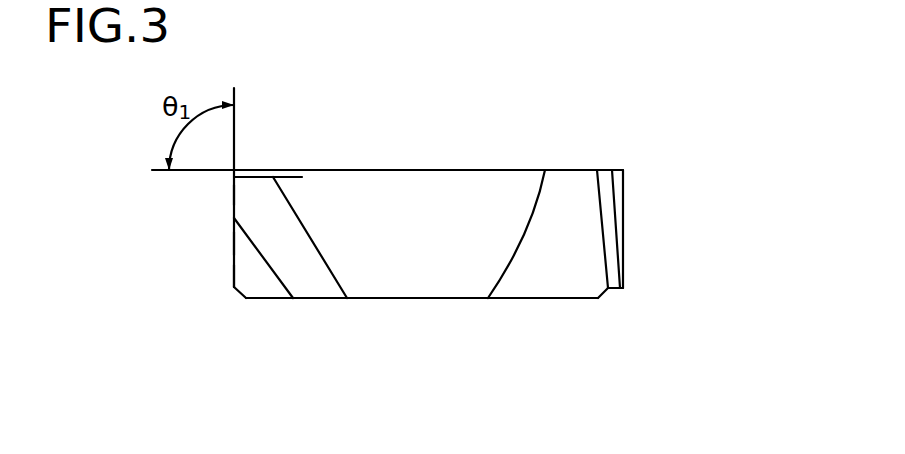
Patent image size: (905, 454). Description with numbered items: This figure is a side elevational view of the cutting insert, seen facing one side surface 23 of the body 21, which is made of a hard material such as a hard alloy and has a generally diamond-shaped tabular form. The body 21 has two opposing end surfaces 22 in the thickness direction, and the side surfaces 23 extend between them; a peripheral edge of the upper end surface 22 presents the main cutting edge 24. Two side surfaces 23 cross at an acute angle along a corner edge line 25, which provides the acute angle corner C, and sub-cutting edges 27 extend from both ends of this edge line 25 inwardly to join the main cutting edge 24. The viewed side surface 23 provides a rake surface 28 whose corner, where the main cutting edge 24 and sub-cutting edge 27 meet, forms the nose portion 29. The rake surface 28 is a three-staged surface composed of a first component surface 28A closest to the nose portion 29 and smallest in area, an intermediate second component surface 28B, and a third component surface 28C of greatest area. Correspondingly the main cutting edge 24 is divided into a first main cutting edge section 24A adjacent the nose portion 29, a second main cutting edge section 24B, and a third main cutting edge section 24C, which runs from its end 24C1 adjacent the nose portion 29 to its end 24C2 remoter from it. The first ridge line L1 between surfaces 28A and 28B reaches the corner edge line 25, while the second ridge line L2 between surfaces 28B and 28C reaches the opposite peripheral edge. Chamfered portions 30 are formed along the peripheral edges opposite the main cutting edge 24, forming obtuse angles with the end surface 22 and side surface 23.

The body 21 is at (631, 128).
The end surface 22 is at (505, 162).
The side surface 23 is at (457, 277).
The main cutting edge 24 is at (233, 169).
The first main cutting edge section 24A is at (273, 300).
The second main cutting edge section 24B is at (323, 300).
The third main cutting edge section 24C is at (403, 300).
The end of third main cutting edge section 24C1 is at (347, 296).
The end of third main cutting edge section 24C2 is at (488, 298).
The corner edge line 25 is at (233, 243).
The sub-cutting edge 27 is at (233, 195).
The rake surface 28 is at (398, 50).
The first component surface 28A is at (246, 252).
The second component surface 28B is at (279, 211).
The third component surface 28C is at (315, 202).
The nose portion 29 is at (231, 307).
The chamfered portion 30 is at (252, 168).
The acute angle corner C is at (201, 220).
The first ridge line L1 is at (273, 265).
The second ridge line L2 is at (316, 239).